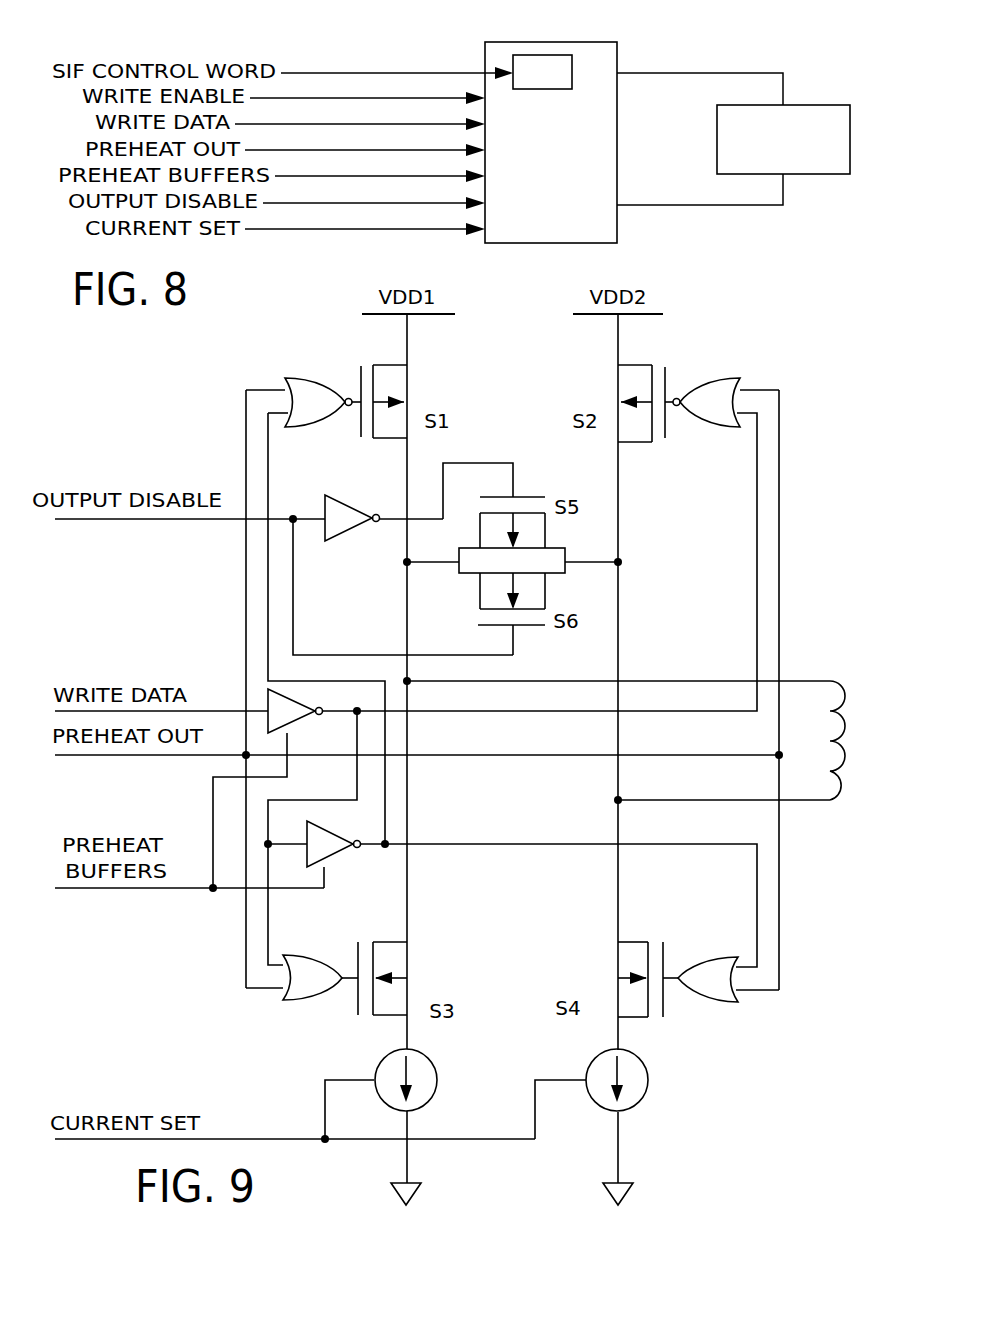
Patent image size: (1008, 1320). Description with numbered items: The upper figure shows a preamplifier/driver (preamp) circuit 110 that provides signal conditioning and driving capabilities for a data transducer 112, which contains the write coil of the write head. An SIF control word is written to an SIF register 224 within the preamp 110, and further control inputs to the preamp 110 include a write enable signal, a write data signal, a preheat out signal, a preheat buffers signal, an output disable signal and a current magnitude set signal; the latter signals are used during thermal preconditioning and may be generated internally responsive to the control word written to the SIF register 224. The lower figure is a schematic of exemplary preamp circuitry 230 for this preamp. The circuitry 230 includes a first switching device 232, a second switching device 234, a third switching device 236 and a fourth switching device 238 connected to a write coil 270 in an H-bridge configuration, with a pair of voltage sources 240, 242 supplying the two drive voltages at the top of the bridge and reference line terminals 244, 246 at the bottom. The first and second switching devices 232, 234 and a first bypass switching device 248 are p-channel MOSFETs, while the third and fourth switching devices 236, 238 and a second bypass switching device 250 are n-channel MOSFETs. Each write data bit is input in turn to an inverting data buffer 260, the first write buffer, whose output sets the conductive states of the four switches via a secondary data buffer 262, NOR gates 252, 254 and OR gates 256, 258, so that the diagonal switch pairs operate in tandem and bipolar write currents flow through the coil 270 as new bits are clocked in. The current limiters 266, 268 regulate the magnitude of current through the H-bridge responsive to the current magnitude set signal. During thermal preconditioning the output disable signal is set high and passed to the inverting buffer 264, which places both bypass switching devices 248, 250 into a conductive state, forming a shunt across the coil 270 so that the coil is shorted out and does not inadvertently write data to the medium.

In FIG. 8, the preamplifier/driver circuit 110 is at (533, 165).
In FIG. 8, the data transducer 112 is at (817, 105).
In FIG. 8, the SIF register 224 is at (548, 55).
In FIG. 9, the preamp circuitry 230 is at (192, 394).
In FIG. 9, the switching device S1 232 is at (358, 372).
In FIG. 9, the switching device S2 234 is at (668, 370).
In FIG. 9, the switching device S3 236 is at (355, 958).
In FIG. 9, the switching device S4 238 is at (668, 950).
In FIG. 9, the voltage source 240 is at (425, 316).
In FIG. 9, the voltage source 242 is at (592, 316).
In FIG. 9, the reference line terminal 244 is at (421, 1197).
In FIG. 9, the reference line terminal 246 is at (633, 1195).
In FIG. 9, the bypass switching device S5 248 is at (546, 492).
In FIG. 9, the bypass switching device S6 250 is at (480, 588).
In FIG. 9, the NOR gate 252 is at (318, 413).
In FIG. 9, the NOR gate 254 is at (700, 414).
In FIG. 9, the OR gate 256 is at (315, 990).
In FIG. 9, the OR gate 258 is at (710, 992).
In FIG. 9, the inverting data buffer 260 is at (293, 715).
In FIG. 9, the secondary data buffer 262 is at (338, 850).
In FIG. 9, the inverting data buffer 264 is at (343, 530).
In FIG. 9, the current limiter 266 is at (437, 1080).
In FIG. 9, the current limiter 268 is at (649, 1080).
In FIG. 9, the write coil 270 is at (846, 696).